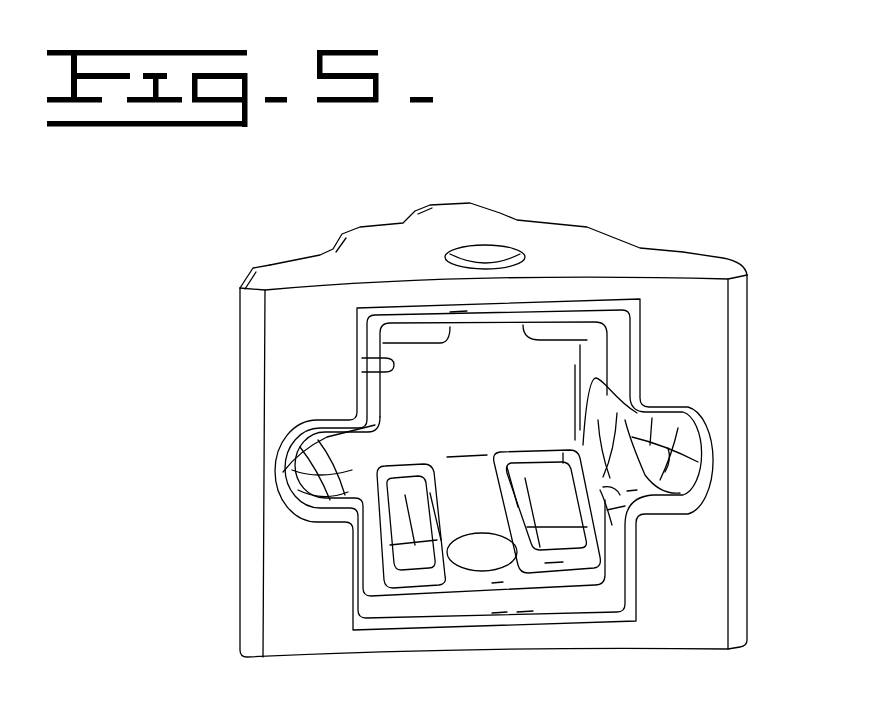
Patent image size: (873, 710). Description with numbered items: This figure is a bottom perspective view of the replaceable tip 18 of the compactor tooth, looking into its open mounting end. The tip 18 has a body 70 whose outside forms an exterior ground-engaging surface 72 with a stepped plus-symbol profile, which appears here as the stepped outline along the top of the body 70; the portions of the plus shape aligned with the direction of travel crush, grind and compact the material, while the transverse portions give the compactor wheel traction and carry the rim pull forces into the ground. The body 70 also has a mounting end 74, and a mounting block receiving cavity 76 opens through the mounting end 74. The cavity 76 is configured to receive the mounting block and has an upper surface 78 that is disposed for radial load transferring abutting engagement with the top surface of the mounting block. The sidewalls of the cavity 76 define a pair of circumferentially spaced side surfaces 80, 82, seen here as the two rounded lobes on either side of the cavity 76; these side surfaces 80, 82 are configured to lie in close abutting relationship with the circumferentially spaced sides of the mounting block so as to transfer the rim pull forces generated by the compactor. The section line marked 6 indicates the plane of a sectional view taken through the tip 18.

The replaceable tip 18 is at (661, 192).
The body 70 is at (688, 245).
The exterior ground-engaging surface 72 is at (373, 228).
The mounting end 74 is at (300, 317).
The mounting block receiving cavity 76 is at (509, 327).
The upper surface 78 is at (485, 428).
The circumferentially spaced side surface 80 is at (385, 362).
The circumferentially spaced side surface 82 is at (610, 515).
The section line 6- 6 is at (250, 475).